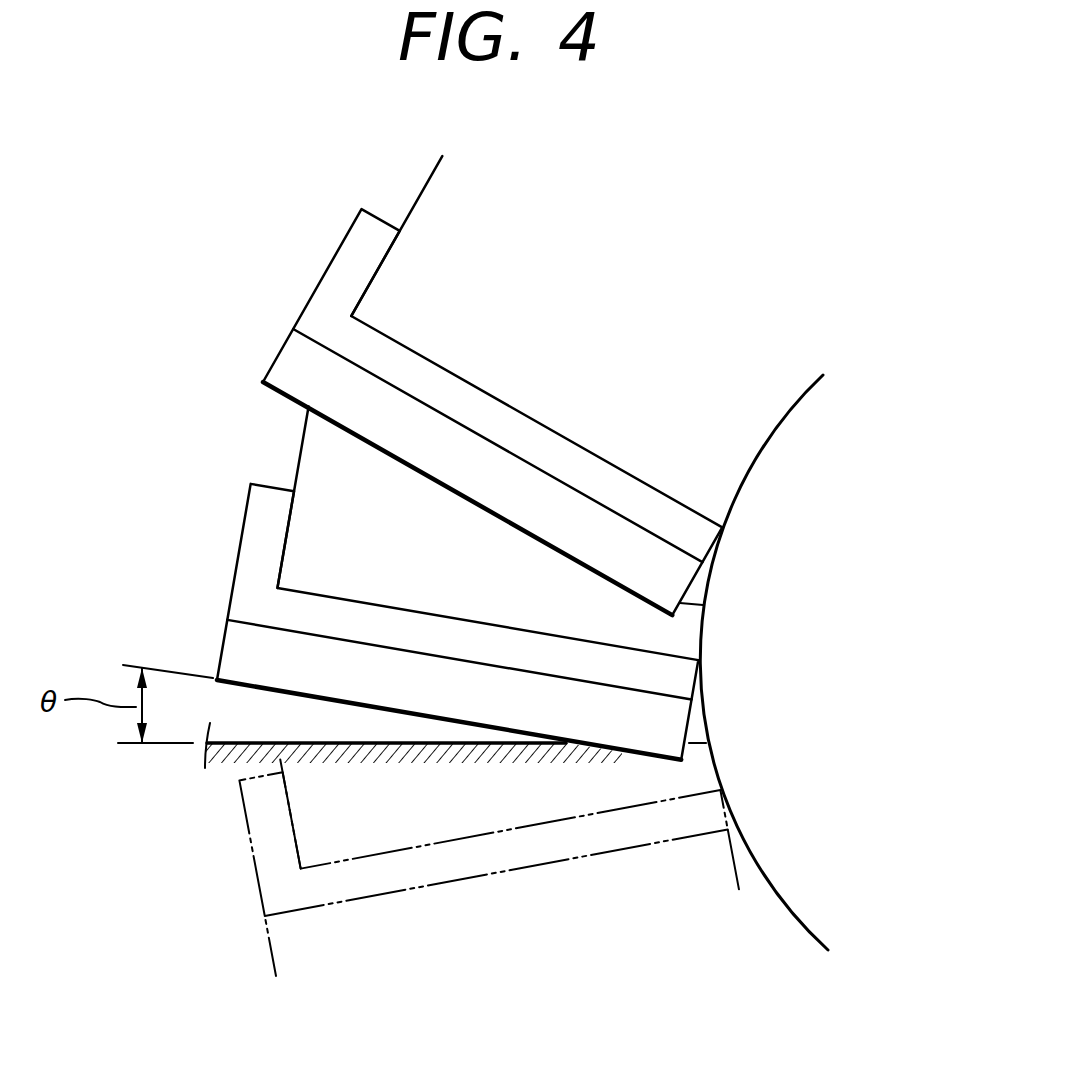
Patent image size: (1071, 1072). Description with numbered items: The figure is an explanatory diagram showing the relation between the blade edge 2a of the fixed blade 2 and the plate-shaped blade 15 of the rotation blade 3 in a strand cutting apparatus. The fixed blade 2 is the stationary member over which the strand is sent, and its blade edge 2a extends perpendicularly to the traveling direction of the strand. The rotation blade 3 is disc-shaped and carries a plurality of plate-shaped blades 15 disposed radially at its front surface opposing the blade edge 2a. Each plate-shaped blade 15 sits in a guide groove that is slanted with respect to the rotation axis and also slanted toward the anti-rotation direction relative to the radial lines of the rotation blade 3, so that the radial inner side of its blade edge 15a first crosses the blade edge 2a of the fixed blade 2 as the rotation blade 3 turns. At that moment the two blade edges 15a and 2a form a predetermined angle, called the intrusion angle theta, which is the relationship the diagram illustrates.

The rotation blade 3 is at (438, 218).
The plate-shaped blade 15 is at (441, 592).
The blade edge of the plate-shaped blade 15a is at (243, 688).
The fixed blade 2 is at (207, 748).
The blade edge of the fixed blade 2a is at (287, 745).